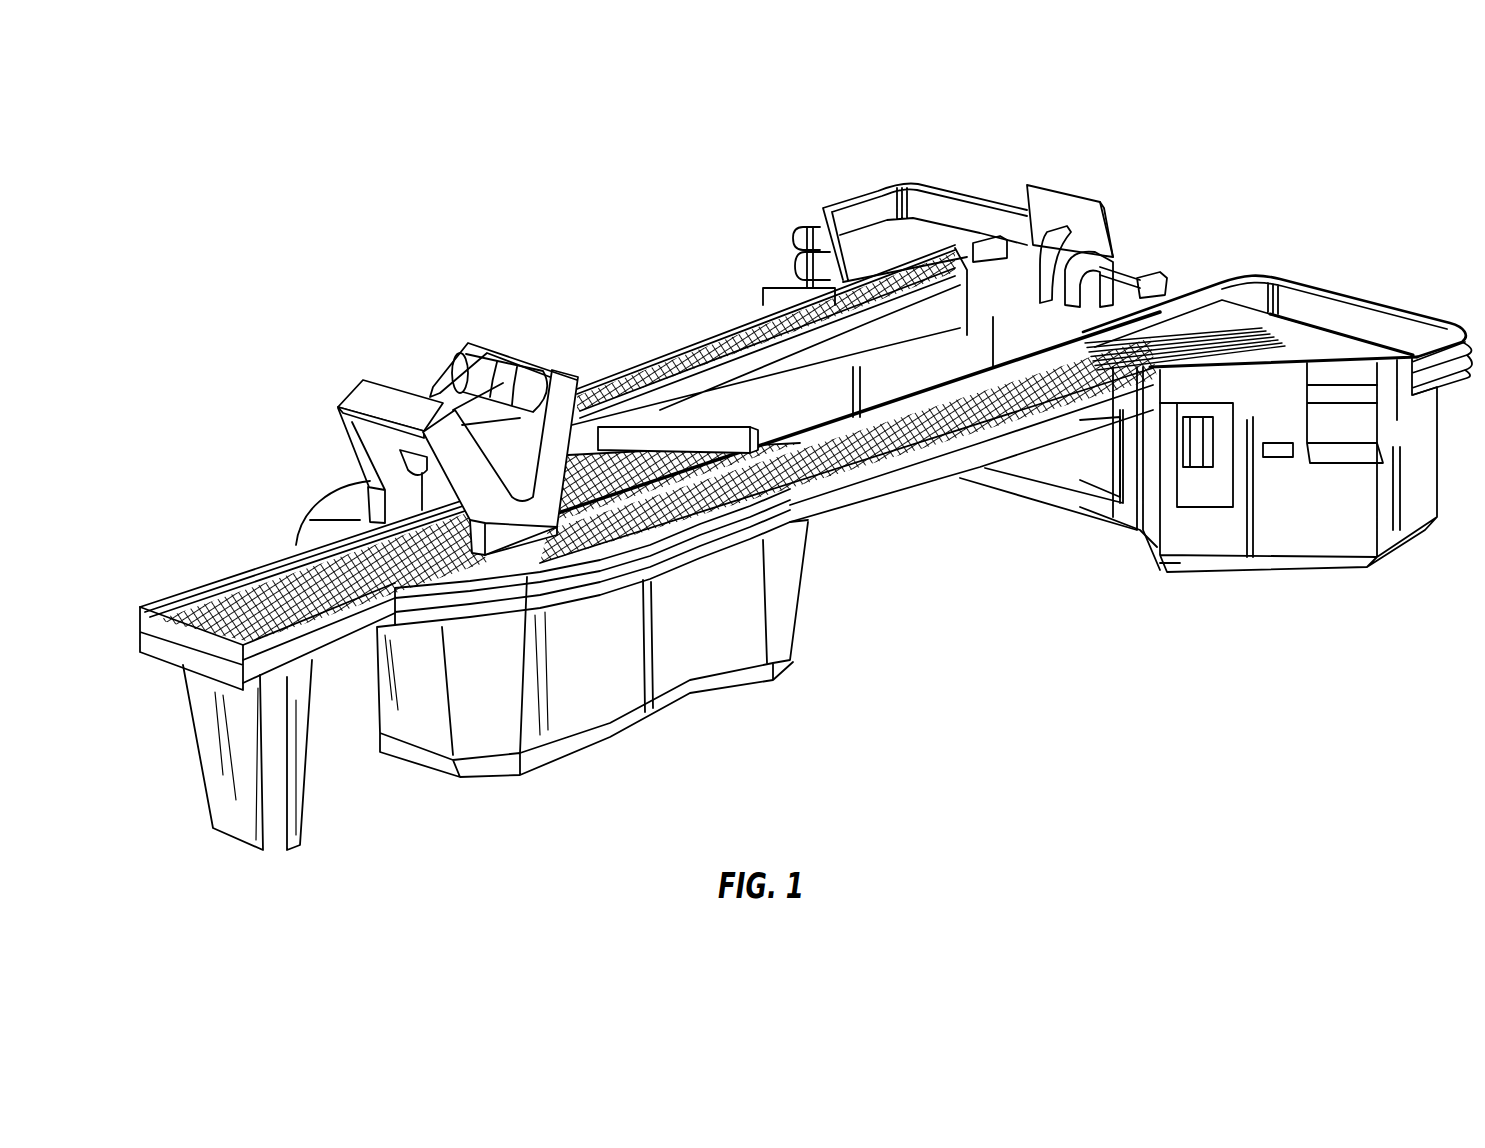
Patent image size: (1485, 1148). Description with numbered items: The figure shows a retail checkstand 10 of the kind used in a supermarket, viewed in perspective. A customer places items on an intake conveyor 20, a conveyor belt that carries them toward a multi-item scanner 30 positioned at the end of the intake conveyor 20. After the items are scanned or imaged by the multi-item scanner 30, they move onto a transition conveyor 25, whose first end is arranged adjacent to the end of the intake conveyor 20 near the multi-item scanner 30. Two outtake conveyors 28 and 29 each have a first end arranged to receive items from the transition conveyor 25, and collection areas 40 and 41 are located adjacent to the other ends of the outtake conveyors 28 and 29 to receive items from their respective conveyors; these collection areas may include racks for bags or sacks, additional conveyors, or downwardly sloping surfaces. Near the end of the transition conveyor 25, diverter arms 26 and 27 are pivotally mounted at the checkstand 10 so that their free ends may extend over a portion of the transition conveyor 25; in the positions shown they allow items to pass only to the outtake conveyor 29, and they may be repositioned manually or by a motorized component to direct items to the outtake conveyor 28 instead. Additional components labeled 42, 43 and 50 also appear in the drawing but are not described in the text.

The checkstand 10 is at (996, 628).
The intake conveyor 20 is at (233, 583).
The transition conveyor 25 is at (590, 385).
The diverter arm 26 is at (657, 490).
The diverter arm 27 is at (722, 443).
The outtake conveyor 28 is at (757, 323).
The outtake conveyor 29 is at (907, 457).
The multi-item scanner 30 is at (382, 398).
The collection area 40 is at (933, 232).
The collection area 41 is at (1325, 332).
The cabinet 42 is at (1285, 537).
The clamp 43 is at (803, 233).
The deflector plate 50 is at (1108, 252).